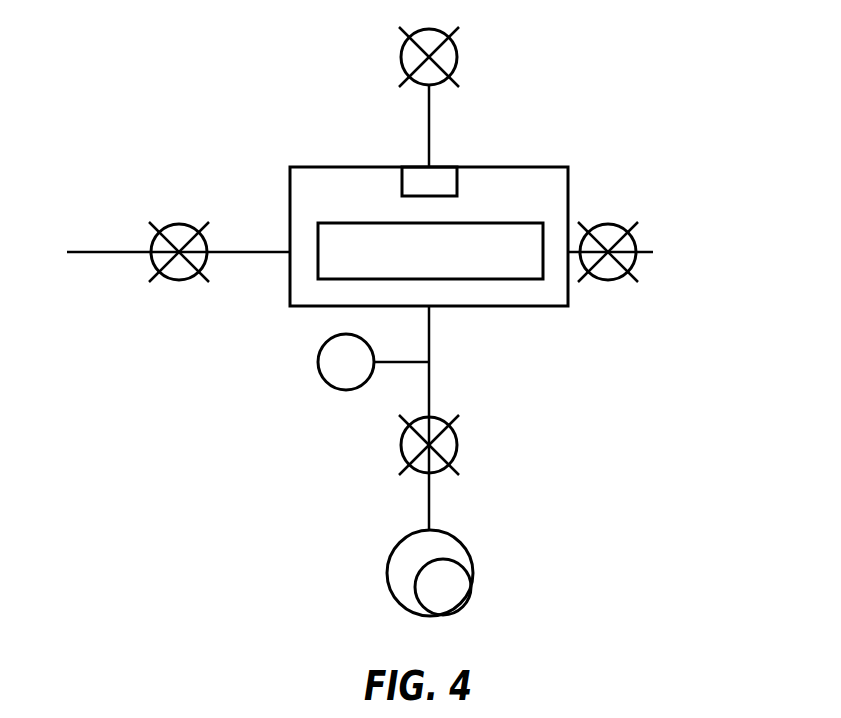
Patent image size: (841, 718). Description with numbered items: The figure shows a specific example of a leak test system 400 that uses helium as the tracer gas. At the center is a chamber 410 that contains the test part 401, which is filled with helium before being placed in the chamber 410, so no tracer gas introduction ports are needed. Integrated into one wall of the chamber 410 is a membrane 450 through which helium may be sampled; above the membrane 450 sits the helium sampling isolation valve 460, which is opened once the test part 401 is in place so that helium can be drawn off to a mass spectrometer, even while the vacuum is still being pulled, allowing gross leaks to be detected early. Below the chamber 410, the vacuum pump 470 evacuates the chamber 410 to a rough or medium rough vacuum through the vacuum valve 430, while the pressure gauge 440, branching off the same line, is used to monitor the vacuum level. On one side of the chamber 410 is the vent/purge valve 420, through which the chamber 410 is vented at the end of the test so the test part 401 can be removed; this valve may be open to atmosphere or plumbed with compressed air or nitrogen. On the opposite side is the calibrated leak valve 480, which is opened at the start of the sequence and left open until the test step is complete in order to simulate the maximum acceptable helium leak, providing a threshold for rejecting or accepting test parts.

The leak test system 400 is at (250, 62).
The test part 401 is at (518, 273).
The chamber 410 is at (523, 167).
The vent/purge valve 420 is at (171, 223).
The vacuum valve 430 is at (459, 443).
The pressure gauge 440 is at (325, 365).
The membrane 450 is at (459, 178).
The helium sampling isolation valve 460 is at (460, 53).
The vacuum pump 470 is at (473, 560).
The calibrated leak valve 480 is at (607, 225).